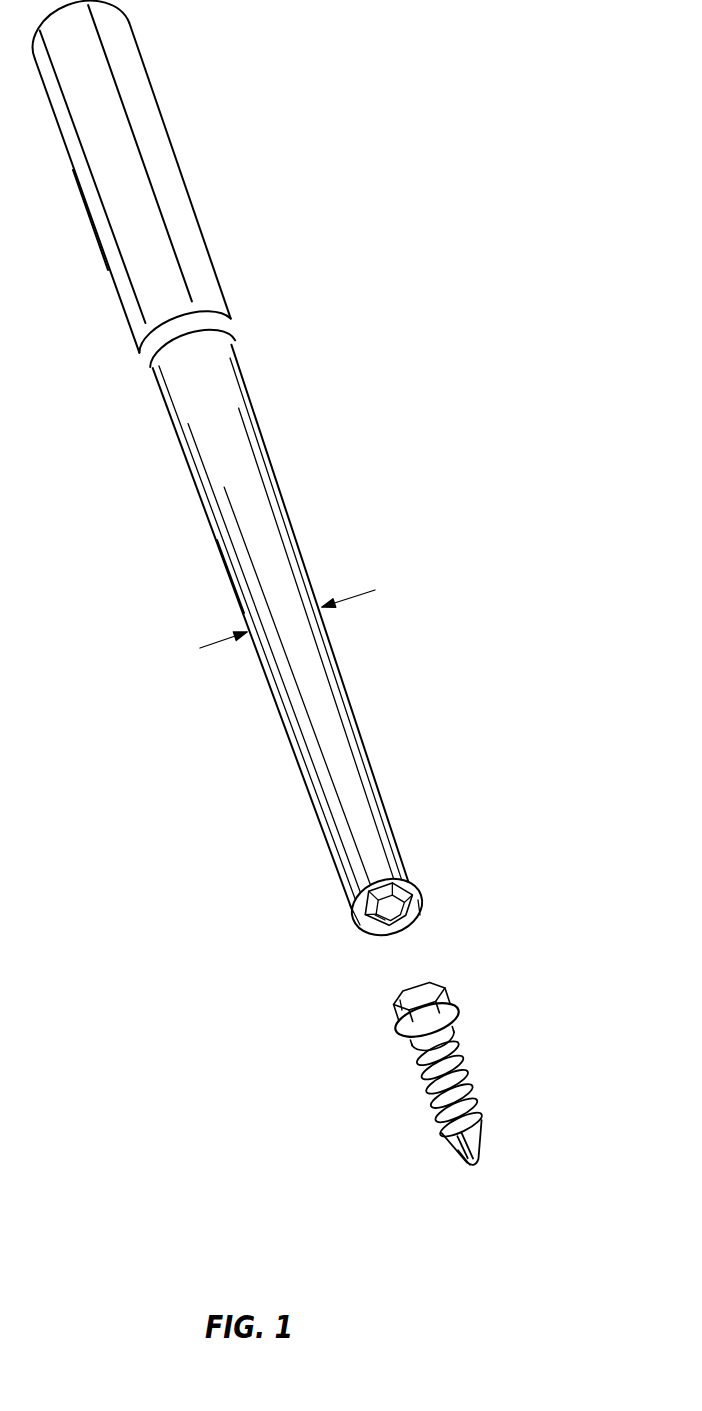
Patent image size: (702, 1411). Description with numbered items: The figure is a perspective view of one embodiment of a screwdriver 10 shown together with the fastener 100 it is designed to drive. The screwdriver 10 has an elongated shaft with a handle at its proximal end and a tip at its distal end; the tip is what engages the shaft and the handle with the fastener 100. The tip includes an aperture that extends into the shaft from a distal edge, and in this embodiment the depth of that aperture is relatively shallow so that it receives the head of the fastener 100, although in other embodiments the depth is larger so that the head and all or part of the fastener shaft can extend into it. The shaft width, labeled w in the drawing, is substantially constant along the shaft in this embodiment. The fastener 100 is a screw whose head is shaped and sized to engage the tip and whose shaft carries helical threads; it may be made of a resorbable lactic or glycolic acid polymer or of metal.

The screwdriver 10 is at (417, 342).
The fastener 100 is at (484, 1071).